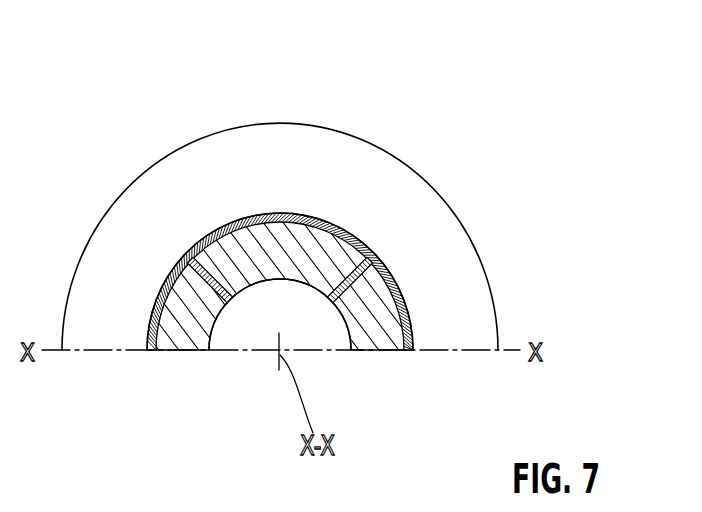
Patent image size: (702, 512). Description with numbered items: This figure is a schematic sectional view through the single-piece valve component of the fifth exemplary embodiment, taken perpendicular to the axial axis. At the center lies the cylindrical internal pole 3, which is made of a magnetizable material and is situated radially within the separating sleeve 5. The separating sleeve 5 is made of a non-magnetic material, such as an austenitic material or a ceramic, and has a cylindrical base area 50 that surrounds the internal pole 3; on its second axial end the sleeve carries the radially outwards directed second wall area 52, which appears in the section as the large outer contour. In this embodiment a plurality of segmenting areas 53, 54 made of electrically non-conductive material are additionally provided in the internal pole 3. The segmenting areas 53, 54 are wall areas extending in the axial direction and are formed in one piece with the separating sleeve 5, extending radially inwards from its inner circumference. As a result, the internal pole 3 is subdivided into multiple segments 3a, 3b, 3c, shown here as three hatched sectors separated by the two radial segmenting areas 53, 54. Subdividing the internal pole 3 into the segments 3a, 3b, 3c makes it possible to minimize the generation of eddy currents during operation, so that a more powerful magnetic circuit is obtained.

The second wall area 52 is at (305, 160).
The separating sleeve 5 is at (272, 200).
The base area 50 is at (230, 223).
The internal pole 3 is at (252, 330).
The segment 3a is at (178, 300).
The segment 3b is at (270, 253).
The segment 3c is at (378, 300).
The segmenting area 53 is at (213, 293).
The segmenting area 54 is at (347, 287).